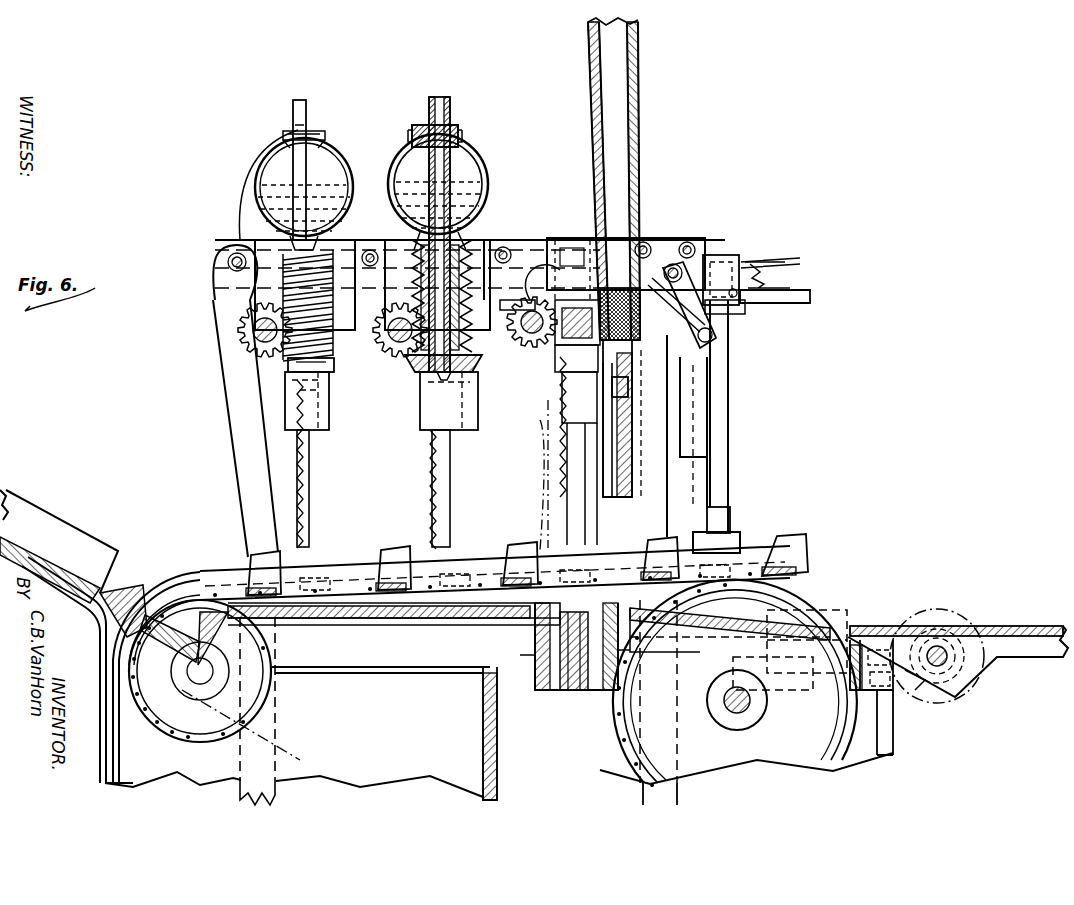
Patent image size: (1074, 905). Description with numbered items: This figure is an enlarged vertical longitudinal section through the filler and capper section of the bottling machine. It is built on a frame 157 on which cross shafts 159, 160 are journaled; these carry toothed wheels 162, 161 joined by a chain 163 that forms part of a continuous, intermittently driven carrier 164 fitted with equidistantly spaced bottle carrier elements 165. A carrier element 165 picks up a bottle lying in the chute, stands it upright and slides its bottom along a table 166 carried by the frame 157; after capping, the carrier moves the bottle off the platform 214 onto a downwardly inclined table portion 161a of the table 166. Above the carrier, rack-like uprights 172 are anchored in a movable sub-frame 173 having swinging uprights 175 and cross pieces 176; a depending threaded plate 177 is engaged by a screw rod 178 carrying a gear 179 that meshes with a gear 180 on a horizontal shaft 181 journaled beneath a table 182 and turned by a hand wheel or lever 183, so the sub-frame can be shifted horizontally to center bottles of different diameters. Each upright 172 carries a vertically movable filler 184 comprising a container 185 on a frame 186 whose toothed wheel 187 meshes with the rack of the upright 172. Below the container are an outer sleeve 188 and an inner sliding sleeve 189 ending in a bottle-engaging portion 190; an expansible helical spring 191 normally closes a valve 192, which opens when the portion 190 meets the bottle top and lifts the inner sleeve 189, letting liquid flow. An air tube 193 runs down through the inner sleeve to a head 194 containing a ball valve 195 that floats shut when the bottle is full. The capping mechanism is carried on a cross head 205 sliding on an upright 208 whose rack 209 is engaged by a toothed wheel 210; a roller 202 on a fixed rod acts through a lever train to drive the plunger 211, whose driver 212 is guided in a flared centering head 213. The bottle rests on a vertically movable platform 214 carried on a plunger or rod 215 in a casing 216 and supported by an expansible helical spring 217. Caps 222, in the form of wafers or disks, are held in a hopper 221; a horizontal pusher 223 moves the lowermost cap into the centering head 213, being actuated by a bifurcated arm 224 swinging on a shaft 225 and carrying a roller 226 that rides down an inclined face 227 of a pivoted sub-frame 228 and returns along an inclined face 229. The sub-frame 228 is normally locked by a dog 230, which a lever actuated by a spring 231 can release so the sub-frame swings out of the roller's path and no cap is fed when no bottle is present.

The frame 157 is at (432, 778).
The cross shaft 159 is at (197, 680).
The cross shaft 160 is at (755, 710).
The toothed wheel 161 is at (625, 735).
The downwardly inclined table portion 161a is at (720, 625).
The toothed wheel 162 is at (278, 690).
The chain 163 is at (390, 612).
The continuous carrier 164 is at (352, 573).
The bottle carrier elements 165 is at (395, 548).
The table 166 is at (452, 622).
The uprights 172 is at (312, 480).
The movable sub-frame 173 is at (472, 245).
The swinging uprights 175 is at (235, 425).
The cross pieces 176 is at (114, 636).
The depending threaded plate 177 is at (840, 583).
The screw rod 178 is at (822, 680).
The gear 179 is at (930, 702).
The gear 180 is at (960, 700).
The horizontal shaft 181 is at (945, 662).
The table 182 is at (1005, 626).
The hand wheel or lever 183 is at (940, 610).
The filler 184 is at (254, 185).
The container 185 is at (335, 158).
The frame 186 is at (258, 233).
The toothed wheel 187 is at (240, 327).
The outer sleeve 188 is at (480, 240).
The inner sliding sleeve 189 is at (475, 236).
The bottle-engaging portion 190 is at (332, 365).
The expansible helical spring 191 is at (560, 270).
The valve 192 is at (454, 380).
The air tube 193 is at (304, 101).
The head 194 is at (290, 380).
The ball valve 195 is at (460, 410).
The roller 202 is at (628, 388).
The cross head 205 is at (518, 338).
The upright 208 is at (570, 512).
The rack 209 is at (540, 440).
The toothed wheel 210 is at (557, 240).
The plunger 211 is at (558, 420).
The driver 212 is at (640, 375).
The centering head 213 is at (556, 370).
The vertically movable platform 214 is at (700, 640).
The plunger or rod 215 is at (576, 690).
The casing 216 is at (570, 672).
The expansible helical spring 217 is at (650, 668).
The hopper 221 is at (640, 180).
The caps 222 is at (645, 250).
The horizontal pusher 223 is at (640, 345).
The bifurcated arm 224 is at (750, 316).
The shaft 225 is at (735, 258).
The roller 226 is at (775, 264).
The inclined face 227 is at (735, 318).
The pivotally supported sub-frame 228 is at (728, 412).
The inclined face 229 is at (705, 262).
The dog 230 is at (790, 260).
The spring 231 is at (800, 285).